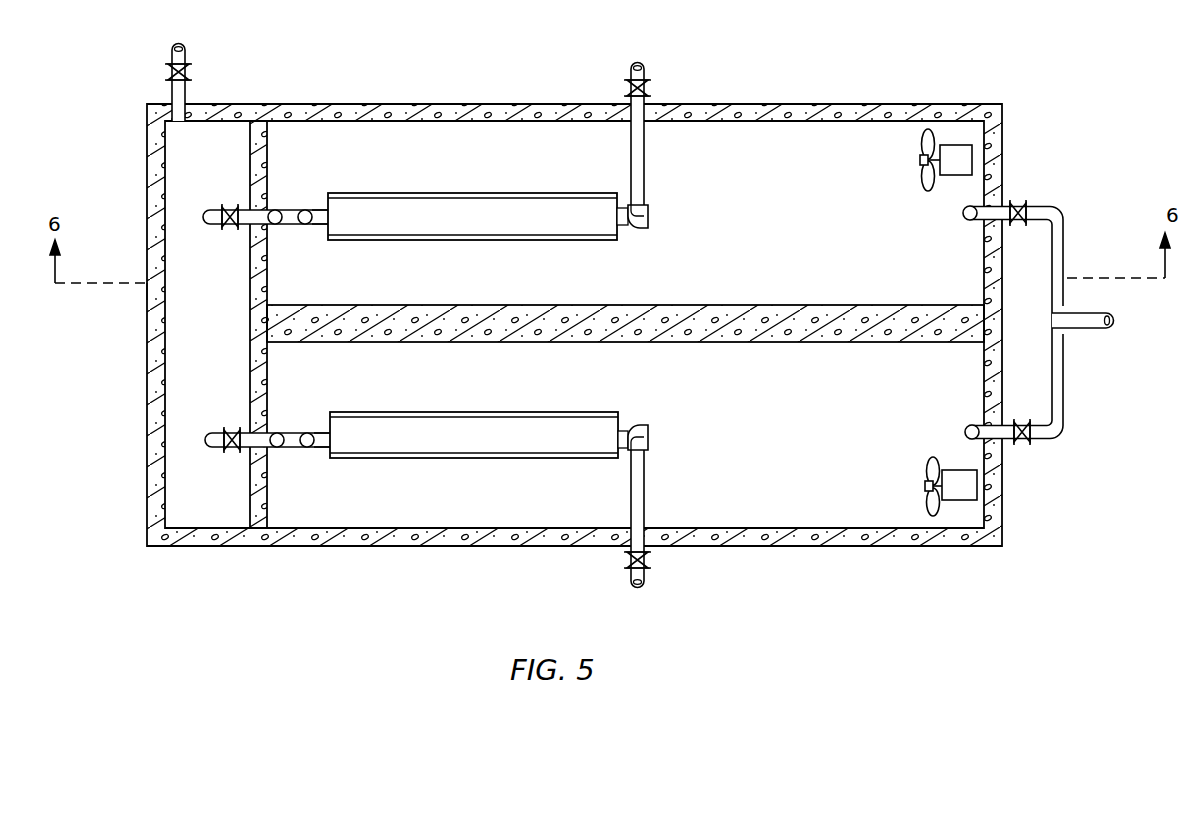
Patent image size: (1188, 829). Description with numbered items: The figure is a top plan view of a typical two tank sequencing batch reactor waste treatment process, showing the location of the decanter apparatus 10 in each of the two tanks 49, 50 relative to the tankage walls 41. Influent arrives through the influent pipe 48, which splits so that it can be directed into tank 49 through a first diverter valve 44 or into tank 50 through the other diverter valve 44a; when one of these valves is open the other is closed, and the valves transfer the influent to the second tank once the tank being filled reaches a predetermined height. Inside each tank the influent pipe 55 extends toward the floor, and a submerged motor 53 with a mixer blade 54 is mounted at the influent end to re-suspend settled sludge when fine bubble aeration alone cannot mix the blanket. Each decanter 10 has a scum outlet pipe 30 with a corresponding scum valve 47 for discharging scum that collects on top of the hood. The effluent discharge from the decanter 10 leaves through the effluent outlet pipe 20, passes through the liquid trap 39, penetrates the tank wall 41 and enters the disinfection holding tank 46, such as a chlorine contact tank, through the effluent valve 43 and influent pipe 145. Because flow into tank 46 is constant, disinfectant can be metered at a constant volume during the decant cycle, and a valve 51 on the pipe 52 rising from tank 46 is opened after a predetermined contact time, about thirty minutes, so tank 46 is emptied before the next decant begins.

The decanter apparatus 10 is at (491, 189).
The effluent outlet pipe 20 is at (308, 226).
The scum outlet pipe 30 is at (644, 158).
The liquid trap 39 is at (292, 210).
The tankage wall 41 is at (256, 135).
The effluent outlet valve 43 is at (230, 229).
The diverter valve 44 is at (1022, 447).
The diverter valve 44a is at (1020, 203).
The disinfection holding tank 46 is at (127, 320).
The scum outlet valve 47 is at (647, 88).
The influent pipe 48 is at (1110, 312).
The first treatment tank 49 is at (808, 270).
The second treatment tank 50 is at (808, 450).
The outlet valve 51 is at (186, 72).
The vent pipe 52 is at (187, 46).
The submerged motor 53 is at (960, 152).
The mixer blade 54 is at (931, 134).
The influent pipe 55 is at (963, 213).
The influent pipe to disinfection tank 145 is at (224, 206).